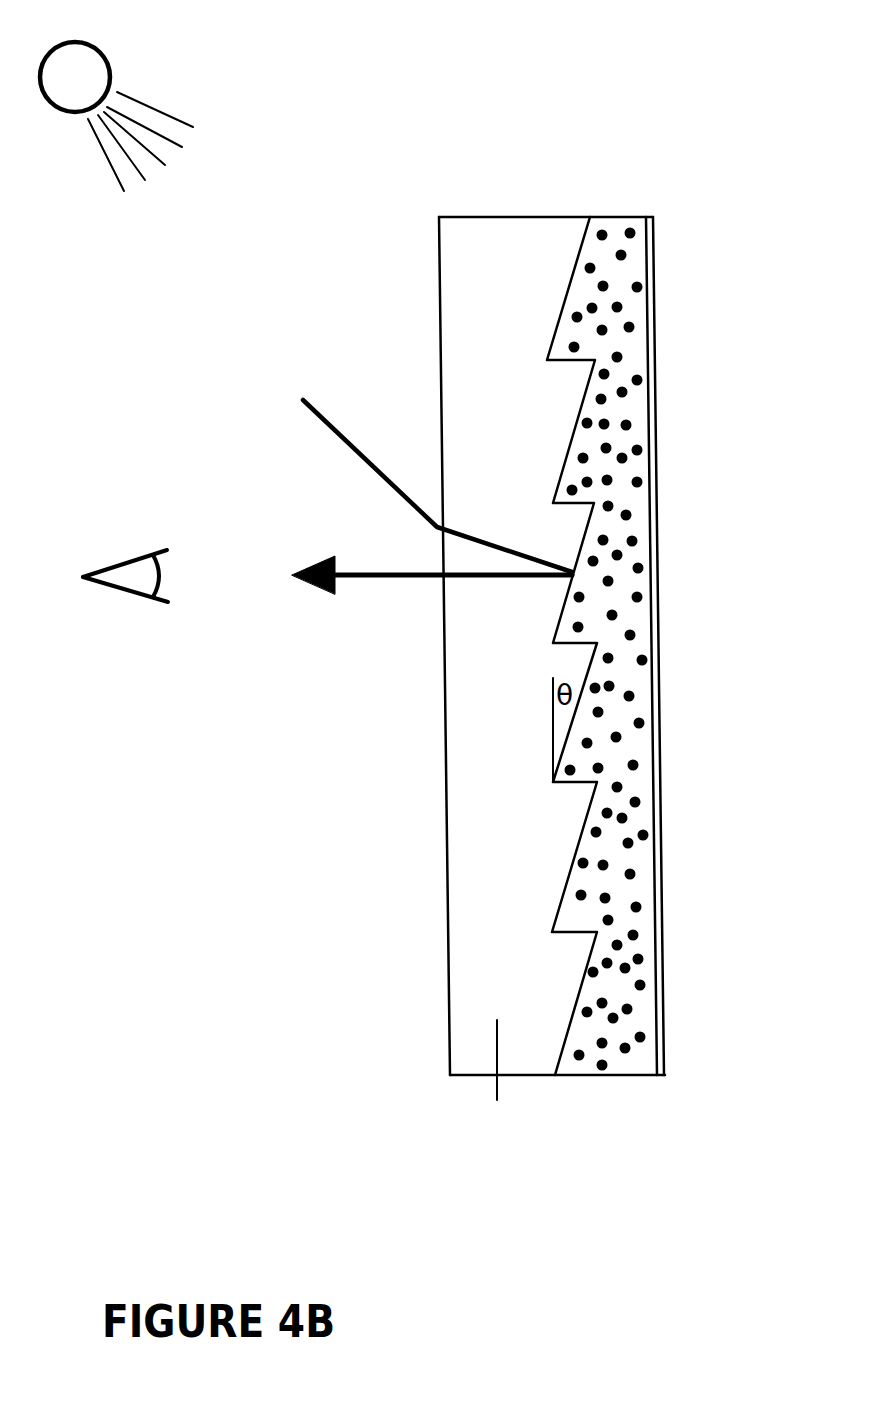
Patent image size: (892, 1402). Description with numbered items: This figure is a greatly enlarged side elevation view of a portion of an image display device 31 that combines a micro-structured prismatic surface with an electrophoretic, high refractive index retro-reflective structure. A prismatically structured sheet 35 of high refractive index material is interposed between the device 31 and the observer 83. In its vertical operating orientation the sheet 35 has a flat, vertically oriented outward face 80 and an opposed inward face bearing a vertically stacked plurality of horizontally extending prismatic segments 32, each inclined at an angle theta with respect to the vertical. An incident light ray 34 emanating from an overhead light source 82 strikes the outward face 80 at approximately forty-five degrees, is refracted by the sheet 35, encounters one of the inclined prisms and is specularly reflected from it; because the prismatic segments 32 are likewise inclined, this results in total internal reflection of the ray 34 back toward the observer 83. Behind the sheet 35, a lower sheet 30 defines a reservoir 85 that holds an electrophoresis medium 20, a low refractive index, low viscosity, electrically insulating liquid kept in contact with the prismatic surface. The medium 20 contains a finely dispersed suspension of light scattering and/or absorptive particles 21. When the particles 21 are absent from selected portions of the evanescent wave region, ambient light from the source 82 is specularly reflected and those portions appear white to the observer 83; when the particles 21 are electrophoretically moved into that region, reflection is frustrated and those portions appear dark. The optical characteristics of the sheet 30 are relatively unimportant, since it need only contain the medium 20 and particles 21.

The overhead light source 82 is at (84, 70).
The observer 83 is at (138, 597).
The incident light ray 34 is at (320, 408).
The flat outward face 80 is at (447, 800).
The prismatic segments 32 is at (567, 289).
The electrophoresis medium 20 is at (640, 683).
The light scattering and/or absorptive particles 21 is at (647, 727).
The lower sheet 30 is at (652, 517).
The reservoir 85 is at (623, 1077).
The prismatically structured sheet 35 is at (504, 1095).
The image display device 31 is at (673, 1095).